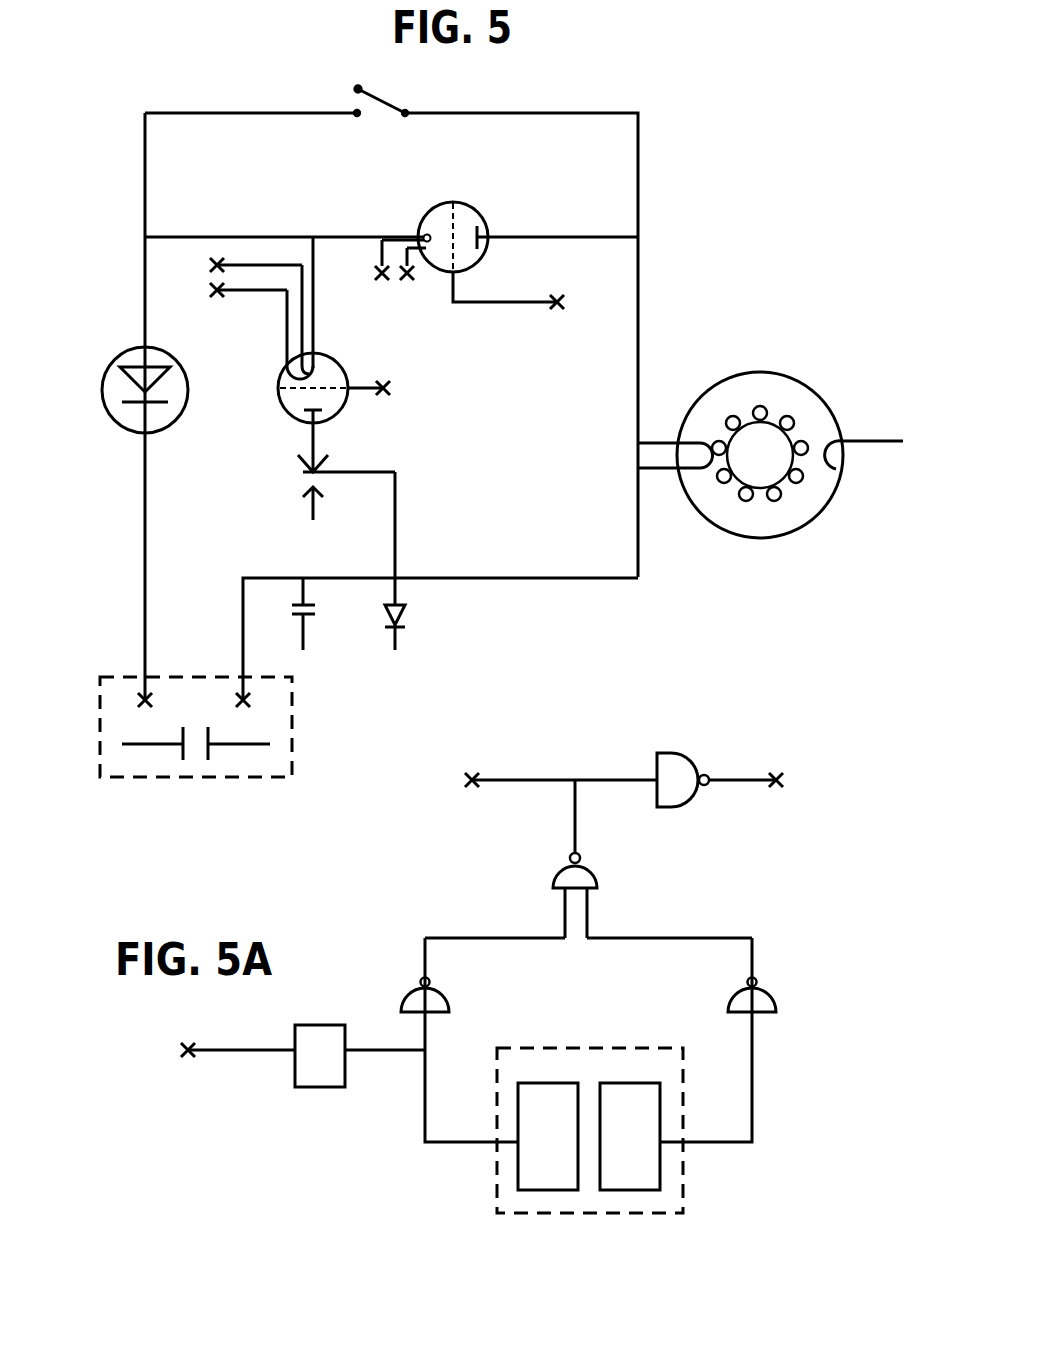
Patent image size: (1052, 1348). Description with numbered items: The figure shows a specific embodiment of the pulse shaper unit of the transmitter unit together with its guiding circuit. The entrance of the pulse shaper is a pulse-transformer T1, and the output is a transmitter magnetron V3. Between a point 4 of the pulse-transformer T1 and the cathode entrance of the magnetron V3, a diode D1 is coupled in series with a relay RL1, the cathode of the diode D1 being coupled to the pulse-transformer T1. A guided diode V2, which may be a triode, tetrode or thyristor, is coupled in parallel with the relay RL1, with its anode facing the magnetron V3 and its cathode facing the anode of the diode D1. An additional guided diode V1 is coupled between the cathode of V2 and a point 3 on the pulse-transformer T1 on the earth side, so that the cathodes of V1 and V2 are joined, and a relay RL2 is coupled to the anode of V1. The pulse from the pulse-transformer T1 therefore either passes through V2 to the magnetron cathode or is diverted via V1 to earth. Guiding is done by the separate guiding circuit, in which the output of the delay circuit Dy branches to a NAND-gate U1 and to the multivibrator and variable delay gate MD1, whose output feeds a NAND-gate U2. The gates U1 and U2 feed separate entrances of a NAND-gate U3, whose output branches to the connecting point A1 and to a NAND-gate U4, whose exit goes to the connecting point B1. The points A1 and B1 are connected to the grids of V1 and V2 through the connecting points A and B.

In FIG. 5, the relay RL1 is at (404, 96).
In FIG. 5, the relay RL2 is at (346, 494).
In FIG. 5, the diode D1 is at (119, 394).
In FIG. 5, the guided diode V1 is at (326, 394).
In FIG. 5, the guided diode V2 is at (465, 223).
In FIG. 5, the transmitter magnetron V3 is at (770, 436).
In FIG. 5, the connecting point A is at (394, 390).
In FIG. 5, the connecting point B is at (573, 310).
In FIG. 5, the pulse-transformer T1 is at (184, 760).
In FIG. 5, the point 3 is at (231, 703).
In FIG. 5, the point 4 is at (156, 703).
In FIG. 5A, the connecting point A1 is at (466, 798).
In FIG. 5A, the connecting point B1 is at (790, 798).
In FIG. 5A, the NAND-gate U1 is at (448, 1002).
In FIG. 5A, the NAND-gate U2 is at (738, 1002).
In FIG. 5A, the NAND-gate U3 is at (599, 895).
In FIG. 5A, the NAND-gate U4 is at (716, 795).
In FIG. 5A, the delay circuit Dy is at (312, 1093).
In FIG. 5A, the multivibrator and variable delay gate MD1 is at (605, 1162).